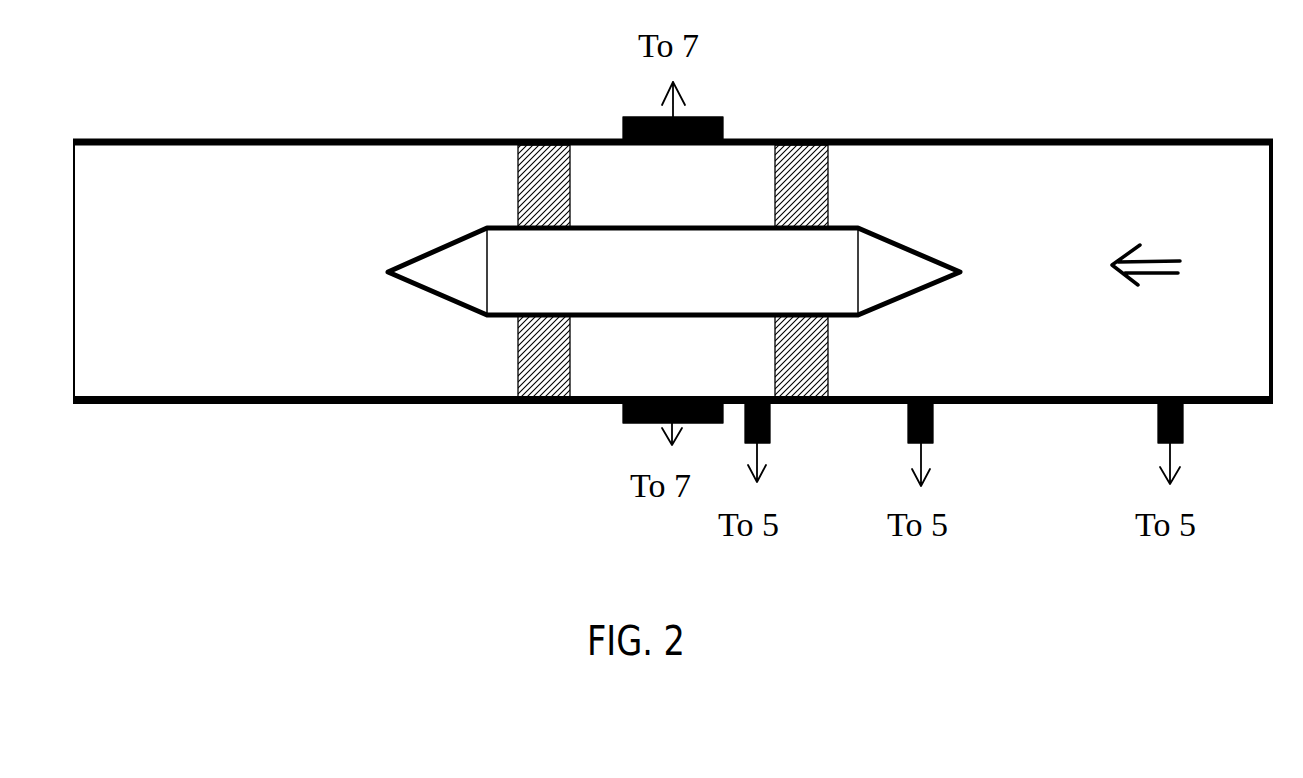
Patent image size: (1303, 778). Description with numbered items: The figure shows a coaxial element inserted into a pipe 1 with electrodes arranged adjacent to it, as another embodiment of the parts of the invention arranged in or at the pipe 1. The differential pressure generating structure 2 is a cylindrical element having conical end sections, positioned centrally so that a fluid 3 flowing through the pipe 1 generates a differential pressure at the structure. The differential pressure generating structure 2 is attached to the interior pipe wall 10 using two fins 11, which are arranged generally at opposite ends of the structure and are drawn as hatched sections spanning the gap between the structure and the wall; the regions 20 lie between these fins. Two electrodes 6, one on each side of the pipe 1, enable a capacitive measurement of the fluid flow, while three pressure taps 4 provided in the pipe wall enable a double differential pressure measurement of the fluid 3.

The pipe 1 is at (212, 138).
The interior pipe wall 10 is at (288, 397).
The fins 11 is at (543, 360).
The channel regions between porous sections 20 is at (683, 211).
The differential pressure generating structure 2 is at (674, 271).
The fluid 3 is at (1147, 242).
The electrodes 6 is at (642, 117).
The pressure taps 4 is at (770, 430).